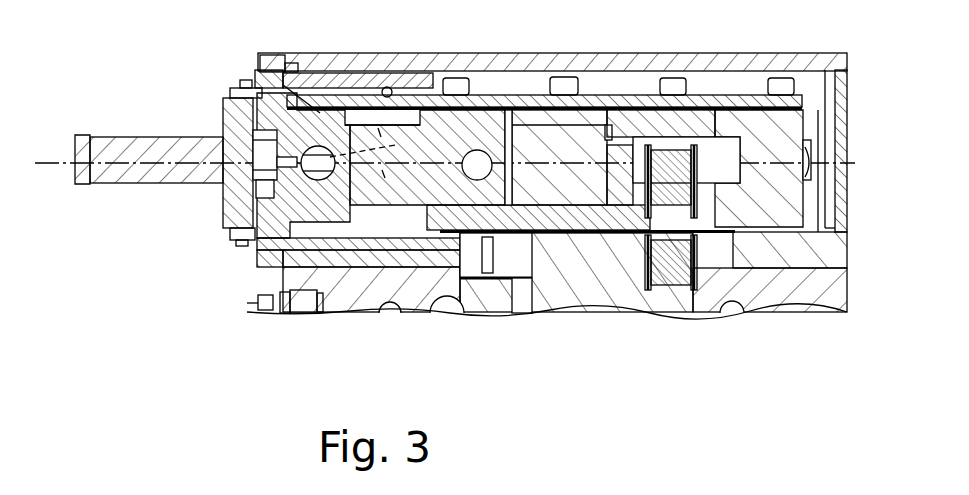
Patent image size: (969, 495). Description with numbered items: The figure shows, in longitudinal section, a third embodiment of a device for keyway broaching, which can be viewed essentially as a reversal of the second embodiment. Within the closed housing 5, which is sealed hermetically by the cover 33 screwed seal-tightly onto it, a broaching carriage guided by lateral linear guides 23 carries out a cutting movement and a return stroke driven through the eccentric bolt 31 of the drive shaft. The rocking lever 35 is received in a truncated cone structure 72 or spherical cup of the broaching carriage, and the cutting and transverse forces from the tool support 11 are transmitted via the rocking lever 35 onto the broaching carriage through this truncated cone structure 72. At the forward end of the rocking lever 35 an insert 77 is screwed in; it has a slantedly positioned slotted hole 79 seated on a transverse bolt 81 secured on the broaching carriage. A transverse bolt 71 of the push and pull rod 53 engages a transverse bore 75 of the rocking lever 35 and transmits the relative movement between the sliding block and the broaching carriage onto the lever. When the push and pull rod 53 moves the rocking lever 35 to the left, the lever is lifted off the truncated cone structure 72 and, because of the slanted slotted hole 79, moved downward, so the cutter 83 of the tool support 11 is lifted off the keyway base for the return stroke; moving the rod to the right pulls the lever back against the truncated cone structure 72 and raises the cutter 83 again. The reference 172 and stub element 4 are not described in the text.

The tool support 11 is at (122, 138).
The tool cutter 83 is at (78, 150).
The insert 77 is at (290, 181).
The transverse bolt 81 is at (312, 178).
The slotted hole 79 is at (317, 175).
The truncated cone structure 72 is at (288, 88).
The rotor body 172 is at (421, 143).
The transverse bore 75 is at (476, 160).
The transverse bolt 71 is at (509, 148).
The push and pull rod 53 is at (584, 130).
The linear guide 23 is at (639, 80).
The eccentric bolt 31 is at (700, 120).
The stub shaft 4 is at (722, 145).
The cover 33 is at (805, 63).
The housing 5 is at (838, 217).
The rocking lever 35 is at (427, 210).